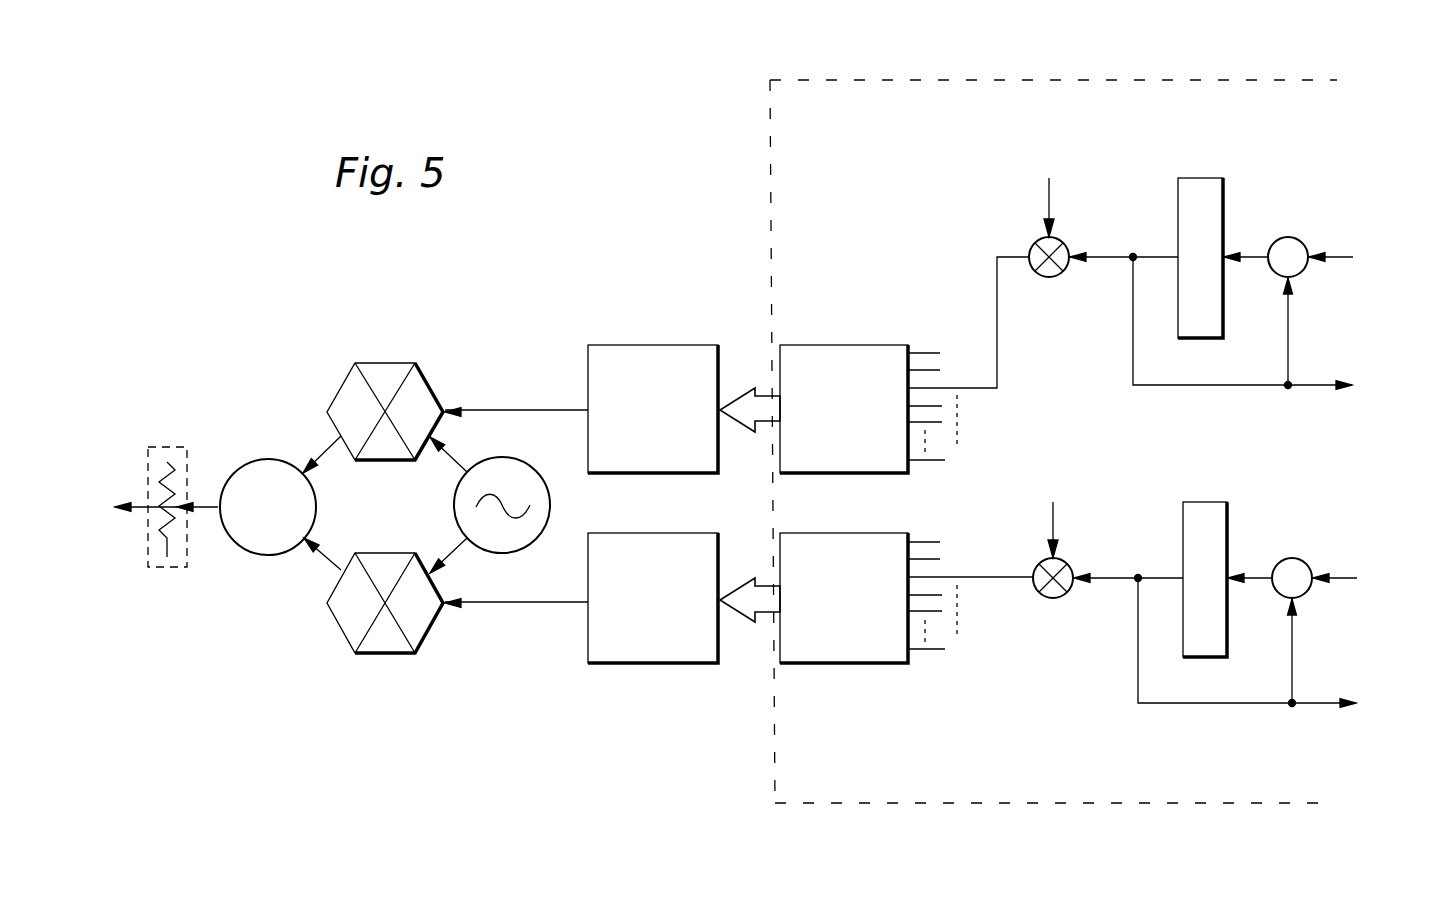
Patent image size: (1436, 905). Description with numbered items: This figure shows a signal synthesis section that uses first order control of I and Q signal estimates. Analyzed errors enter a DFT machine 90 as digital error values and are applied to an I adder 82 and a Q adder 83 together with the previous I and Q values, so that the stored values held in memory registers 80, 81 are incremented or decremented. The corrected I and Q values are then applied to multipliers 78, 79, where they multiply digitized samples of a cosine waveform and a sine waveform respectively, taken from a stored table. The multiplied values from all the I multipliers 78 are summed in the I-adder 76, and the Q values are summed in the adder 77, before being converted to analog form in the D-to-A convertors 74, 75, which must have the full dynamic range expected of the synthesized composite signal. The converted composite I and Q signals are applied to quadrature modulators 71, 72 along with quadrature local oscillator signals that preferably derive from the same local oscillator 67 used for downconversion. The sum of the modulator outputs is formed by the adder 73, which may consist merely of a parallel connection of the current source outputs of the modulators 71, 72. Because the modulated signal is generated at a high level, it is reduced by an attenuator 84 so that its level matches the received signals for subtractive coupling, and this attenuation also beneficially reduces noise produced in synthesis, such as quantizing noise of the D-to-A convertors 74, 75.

The local oscillator 67 is at (550, 505).
The quadrature modulator 71 is at (386, 363).
The quadrature modulator 72 is at (386, 653).
The adder 73 is at (268, 555).
The D-to-A convertor 74 is at (650, 473).
The D-to-A convertor 75 is at (650, 663).
The I-adder 76 is at (843, 473).
The adder 77 is at (843, 663).
The multiplier 78 is at (1049, 277).
The multiplier 79 is at (1053, 598).
The memory register 80 is at (1200, 338).
The memory register 81 is at (1205, 657).
The I adder 82 is at (1287, 237).
The Q adder 83 is at (1293, 558).
The attenuator 84 is at (167, 447).
The DFT machine 90 is at (1103, 805).